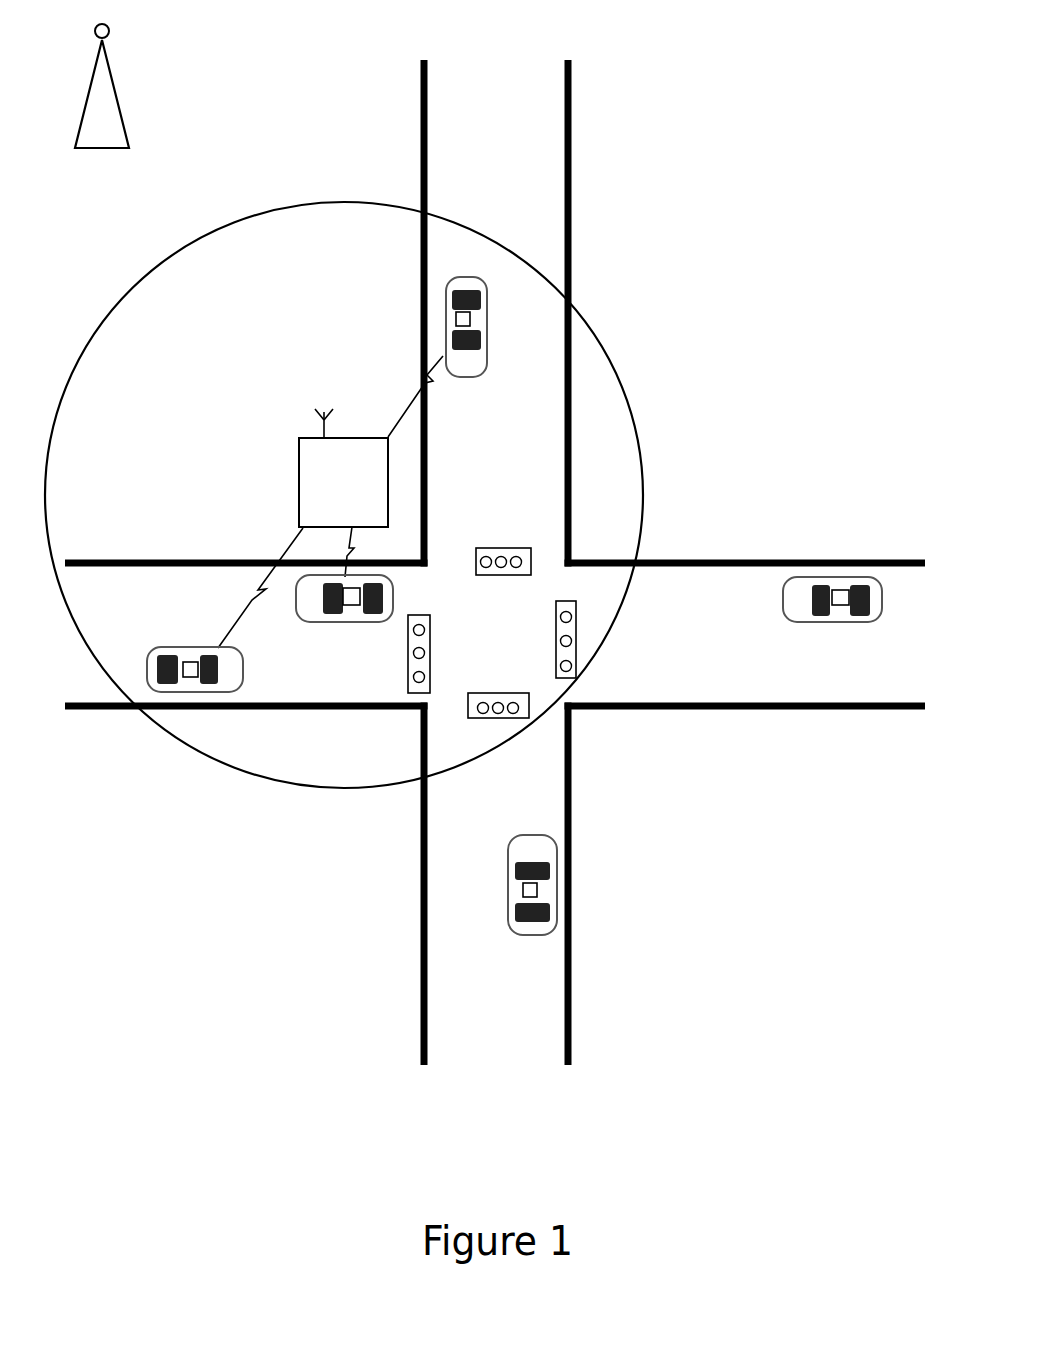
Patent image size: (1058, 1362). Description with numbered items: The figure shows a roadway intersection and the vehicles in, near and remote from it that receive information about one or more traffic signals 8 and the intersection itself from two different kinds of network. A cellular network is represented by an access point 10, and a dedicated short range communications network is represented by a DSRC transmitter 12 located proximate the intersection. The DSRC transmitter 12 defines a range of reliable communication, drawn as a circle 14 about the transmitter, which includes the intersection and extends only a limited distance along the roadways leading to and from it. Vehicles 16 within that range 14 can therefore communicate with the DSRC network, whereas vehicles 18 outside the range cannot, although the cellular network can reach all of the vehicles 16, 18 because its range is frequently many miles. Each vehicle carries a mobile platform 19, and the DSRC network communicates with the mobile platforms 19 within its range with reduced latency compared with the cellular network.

The traffic signal 8 is at (507, 548).
The access point 10 is at (118, 105).
The DSRC transmitter 12 is at (355, 437).
The circle 14 is at (627, 397).
The vehicles 16 is at (446, 308).
The vehicles 18 is at (883, 600).
The mobile platforms 19 is at (470, 320).